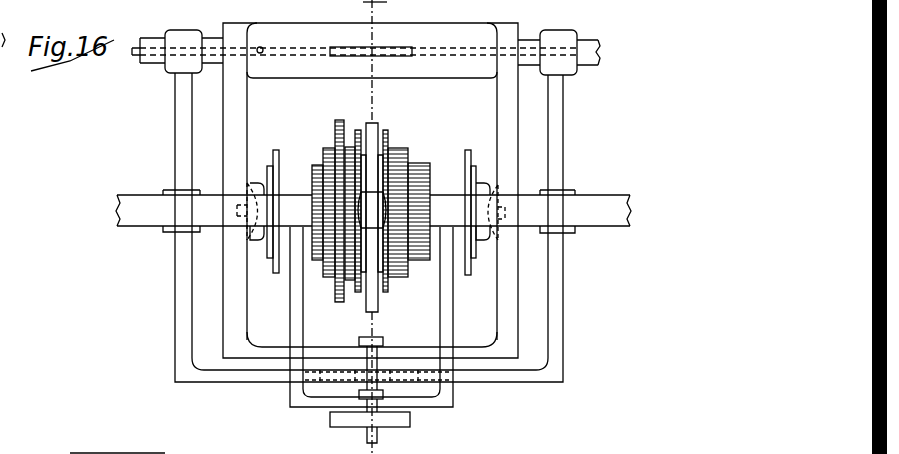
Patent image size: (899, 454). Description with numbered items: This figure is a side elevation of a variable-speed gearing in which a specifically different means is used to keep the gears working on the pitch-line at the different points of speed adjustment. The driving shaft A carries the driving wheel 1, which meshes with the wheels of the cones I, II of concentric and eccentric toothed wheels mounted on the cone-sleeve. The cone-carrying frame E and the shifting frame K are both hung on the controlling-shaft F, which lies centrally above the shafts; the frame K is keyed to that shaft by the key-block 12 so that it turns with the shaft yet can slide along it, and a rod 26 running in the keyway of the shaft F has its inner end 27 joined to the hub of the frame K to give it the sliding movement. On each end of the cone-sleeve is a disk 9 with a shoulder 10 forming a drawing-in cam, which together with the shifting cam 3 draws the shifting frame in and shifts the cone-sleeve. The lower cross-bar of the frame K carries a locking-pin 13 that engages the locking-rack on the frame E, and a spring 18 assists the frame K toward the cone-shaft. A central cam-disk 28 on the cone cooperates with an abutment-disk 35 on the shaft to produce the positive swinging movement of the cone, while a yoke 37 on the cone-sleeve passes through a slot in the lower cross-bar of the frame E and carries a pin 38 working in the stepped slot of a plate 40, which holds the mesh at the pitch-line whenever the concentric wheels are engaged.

The driving wheel 1 is at (344, 115).
The shifting cam 3 is at (262, 238).
The disk 9 is at (279, 153).
The shoulder 10 is at (268, 168).
The key-block 12 is at (384, 48).
The locking-pin 13 is at (378, 358).
The spring 18 is at (415, 432).
The rod 26 is at (142, 56).
The inner end of rod 27 is at (263, 48).
The cam-shaped disk 28 is at (372, 122).
The abutment-disk 35 is at (366, 211).
The yoke 37 is at (384, 317).
The pin 38 is at (385, 423).
The plate 40 is at (415, 412).
The driving shaft A is at (150, 192).
The cone-carrying frame E is at (566, 358).
The controlling-shaft F is at (155, 37).
The shifting frame K is at (508, 291).
The cone I is at (409, 210).
The cone II is at (323, 210).